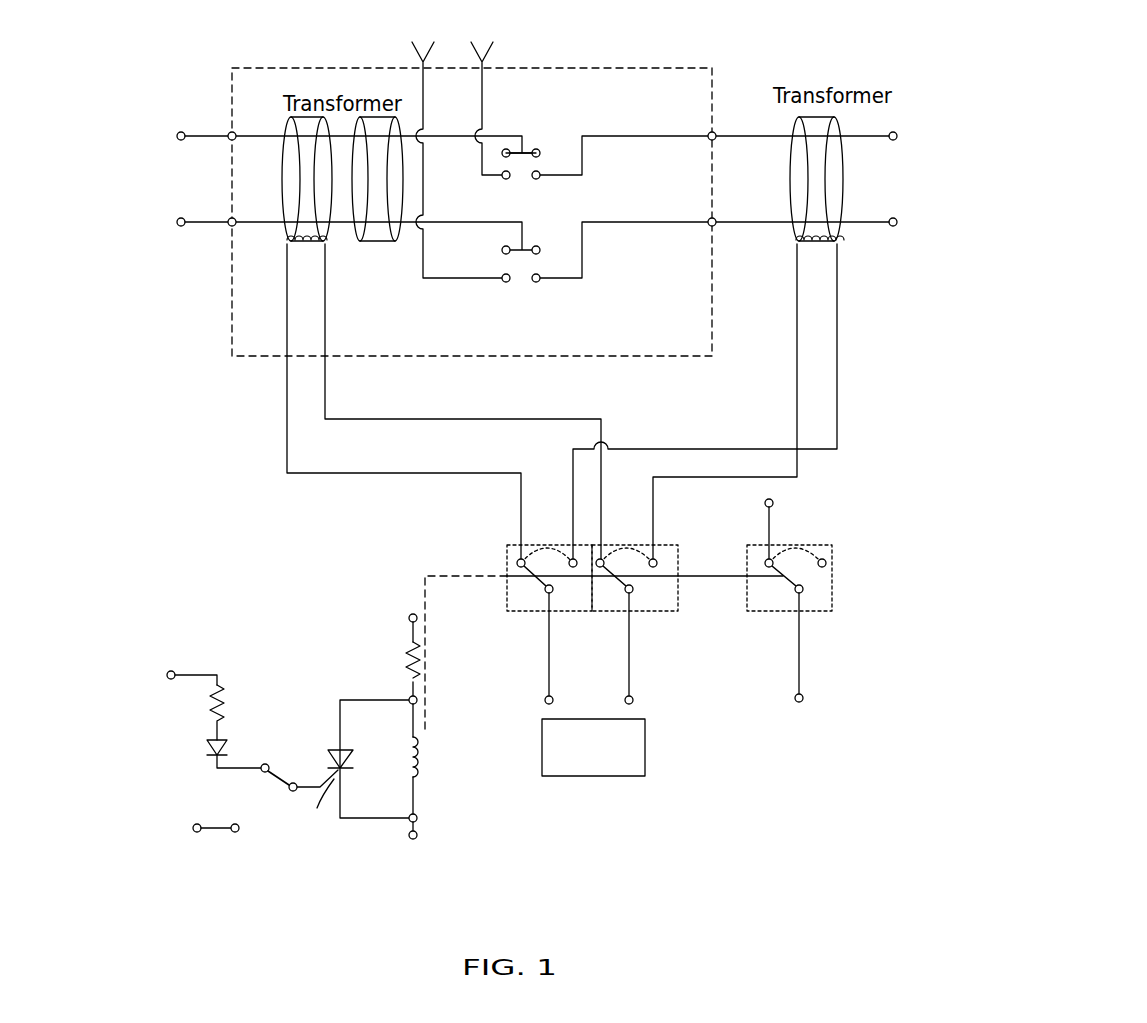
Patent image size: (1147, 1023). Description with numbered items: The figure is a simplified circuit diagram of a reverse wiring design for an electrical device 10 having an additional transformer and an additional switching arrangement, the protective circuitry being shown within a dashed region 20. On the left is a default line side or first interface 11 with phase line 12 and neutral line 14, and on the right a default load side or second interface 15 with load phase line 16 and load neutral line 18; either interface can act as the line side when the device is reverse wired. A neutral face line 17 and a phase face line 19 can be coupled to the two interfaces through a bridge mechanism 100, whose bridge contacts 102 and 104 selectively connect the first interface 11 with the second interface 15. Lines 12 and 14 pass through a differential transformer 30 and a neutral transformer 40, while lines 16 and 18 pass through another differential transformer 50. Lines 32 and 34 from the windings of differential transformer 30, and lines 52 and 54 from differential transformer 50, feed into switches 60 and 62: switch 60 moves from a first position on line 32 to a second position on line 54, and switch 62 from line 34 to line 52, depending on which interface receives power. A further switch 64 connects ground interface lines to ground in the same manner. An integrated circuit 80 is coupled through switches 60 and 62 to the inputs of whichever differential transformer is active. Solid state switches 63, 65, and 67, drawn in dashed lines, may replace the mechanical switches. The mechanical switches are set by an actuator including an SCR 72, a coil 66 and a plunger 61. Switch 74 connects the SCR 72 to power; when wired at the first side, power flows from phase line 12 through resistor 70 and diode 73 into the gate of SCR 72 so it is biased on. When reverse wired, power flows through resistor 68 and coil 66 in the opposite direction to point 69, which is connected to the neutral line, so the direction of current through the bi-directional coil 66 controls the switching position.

The electrical wiring device 10 is at (581, 60).
The first interface 11 is at (180, 163).
The phase line 12 is at (232, 133).
The neutral line 14 is at (205, 228).
The second interface 15 is at (919, 164).
The load phase line 16 is at (696, 138).
The neutral face line 17 is at (420, 77).
The load neutral line 18 is at (696, 223).
The phase face line 19 is at (485, 78).
The circuit interrupting portion 20 is at (259, 364).
The differential transformer 30 is at (282, 183).
The line 32 is at (334, 474).
The line 34 is at (378, 420).
The neutral transformer 40 is at (378, 243).
The differential transformer 50 is at (843, 179).
The line 52 is at (837, 323).
The line 54 is at (797, 323).
The switch 60 is at (534, 590).
The plunger 61 is at (426, 658).
The switch 62 is at (664, 561).
The solid state switch 63 is at (505, 548).
The switch 64 is at (806, 544).
The solid state switch 65 is at (682, 611).
The coil 66 is at (426, 767).
The solid state switch 67 is at (765, 611).
The resistor 68 is at (397, 648).
The point 69 is at (410, 836).
The resistor 70 is at (224, 722).
The SCR 72 is at (336, 731).
The diode 73 is at (215, 757).
The switch 74 is at (266, 784).
The integrated circuit 80 is at (587, 759).
The bridge mechanism 100 is at (529, 137).
The bridge contact 102 is at (546, 164).
The bridge contact 104 is at (546, 264).